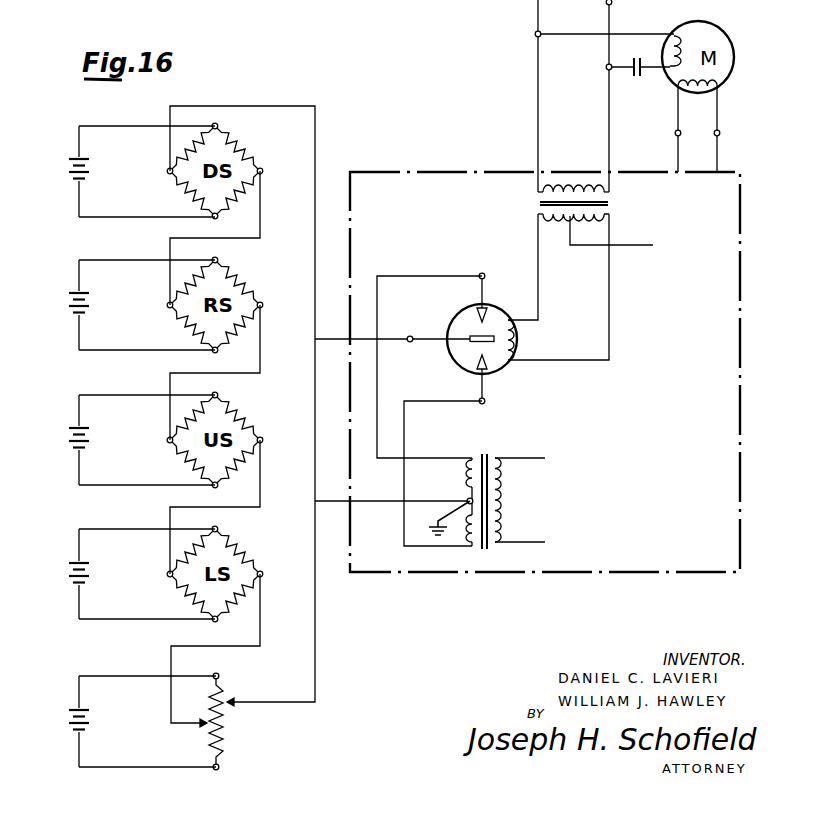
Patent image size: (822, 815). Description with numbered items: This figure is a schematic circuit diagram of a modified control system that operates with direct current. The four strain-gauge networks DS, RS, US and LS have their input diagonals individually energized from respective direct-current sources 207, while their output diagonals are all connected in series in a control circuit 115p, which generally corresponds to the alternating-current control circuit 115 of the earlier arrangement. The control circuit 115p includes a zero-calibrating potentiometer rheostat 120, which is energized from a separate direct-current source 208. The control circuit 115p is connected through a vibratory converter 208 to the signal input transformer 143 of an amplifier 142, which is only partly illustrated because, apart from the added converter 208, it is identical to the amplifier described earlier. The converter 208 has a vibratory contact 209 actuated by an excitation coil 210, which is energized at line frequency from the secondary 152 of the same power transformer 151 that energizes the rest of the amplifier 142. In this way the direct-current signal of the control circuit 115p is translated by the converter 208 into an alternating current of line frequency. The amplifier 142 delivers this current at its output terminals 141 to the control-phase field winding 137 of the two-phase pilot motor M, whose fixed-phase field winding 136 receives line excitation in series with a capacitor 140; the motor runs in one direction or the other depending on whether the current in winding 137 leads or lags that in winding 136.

The control circuit 115 is at (440, 4).
The control circuit 115p is at (315, 223).
The zero-calibrating potentiometer rheostat 120 is at (220, 722).
The field winding 136 is at (673, 39).
The field winding 137 is at (707, 90).
The capacitor 140 is at (622, 73).
The output terminals 141 is at (681, 137).
The amplifier 142 is at (645, 574).
The signal input transformer 143 is at (486, 457).
The power transformer 151 is at (612, 203).
The secondary 152 is at (537, 222).
The direct-current source 207 is at (65, 179).
The vibratory converter 208 is at (65, 732).
The vibratory contact 209 is at (474, 332).
The excitation coil 210 is at (517, 337).